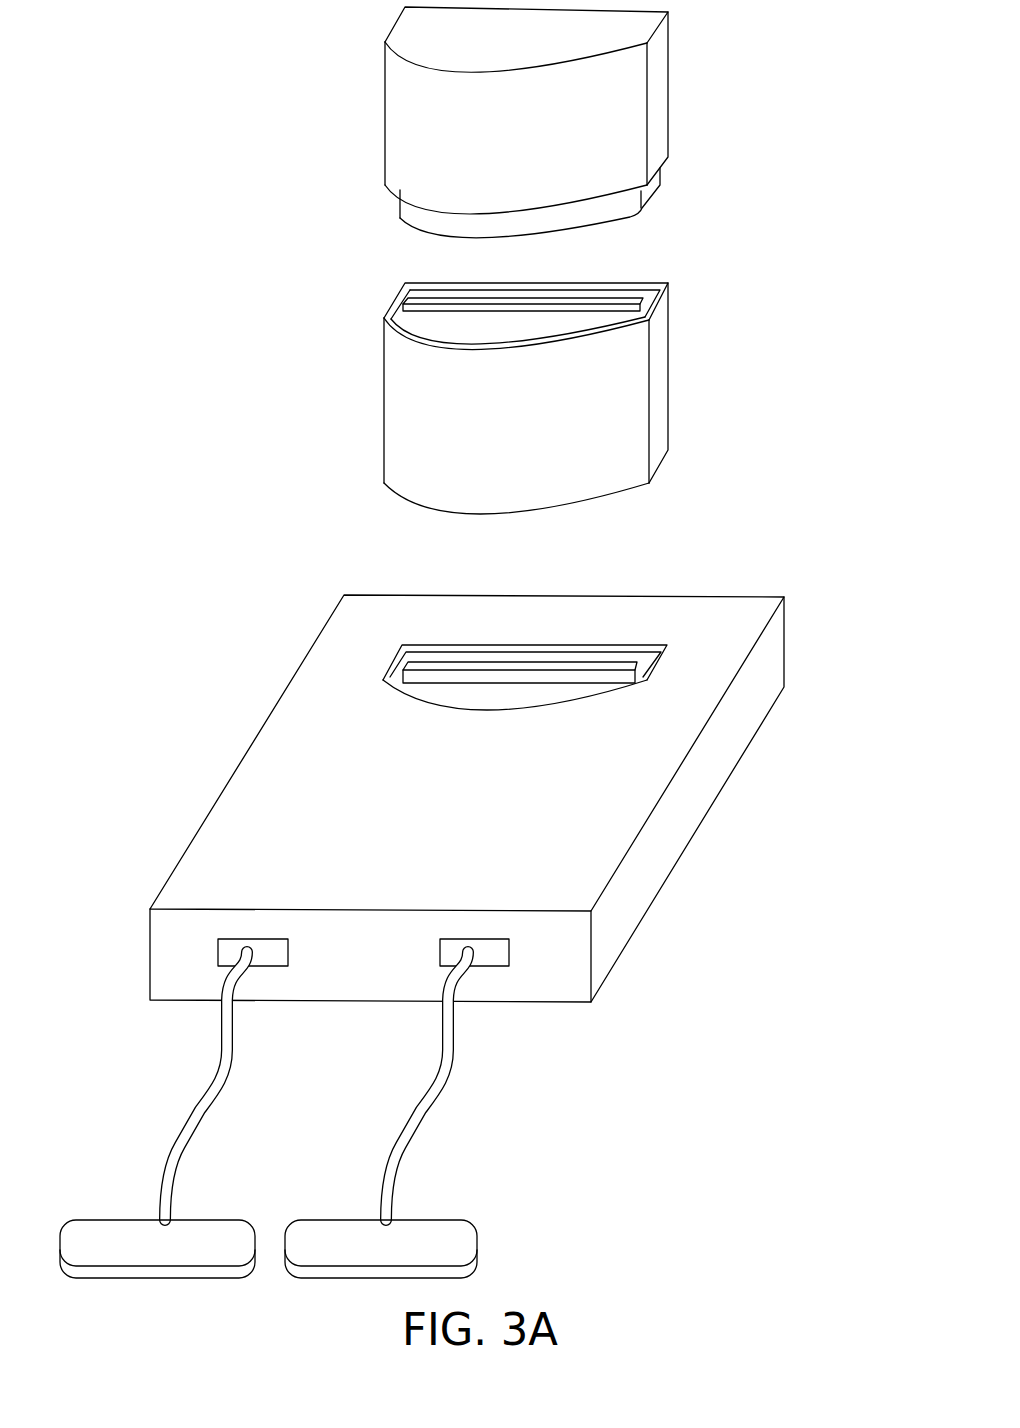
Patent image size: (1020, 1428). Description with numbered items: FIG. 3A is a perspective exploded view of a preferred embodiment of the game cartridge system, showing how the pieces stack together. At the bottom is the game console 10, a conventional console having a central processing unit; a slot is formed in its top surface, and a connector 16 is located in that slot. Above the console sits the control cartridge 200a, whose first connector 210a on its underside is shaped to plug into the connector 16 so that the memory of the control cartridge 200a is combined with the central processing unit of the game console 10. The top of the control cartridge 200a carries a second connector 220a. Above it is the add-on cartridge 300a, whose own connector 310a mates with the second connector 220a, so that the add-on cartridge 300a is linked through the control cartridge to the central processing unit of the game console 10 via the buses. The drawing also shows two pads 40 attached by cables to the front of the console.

The add-on cartridge 300a is at (658, 95).
The connector of the add-on cartridge 310a is at (643, 220).
The control cartridge 200a is at (658, 393).
The second connector 220a is at (597, 302).
The first connector 210a is at (545, 513).
The connector 16 is at (610, 663).
The game console 10 is at (705, 777).
The pad 40 is at (223, 1220).